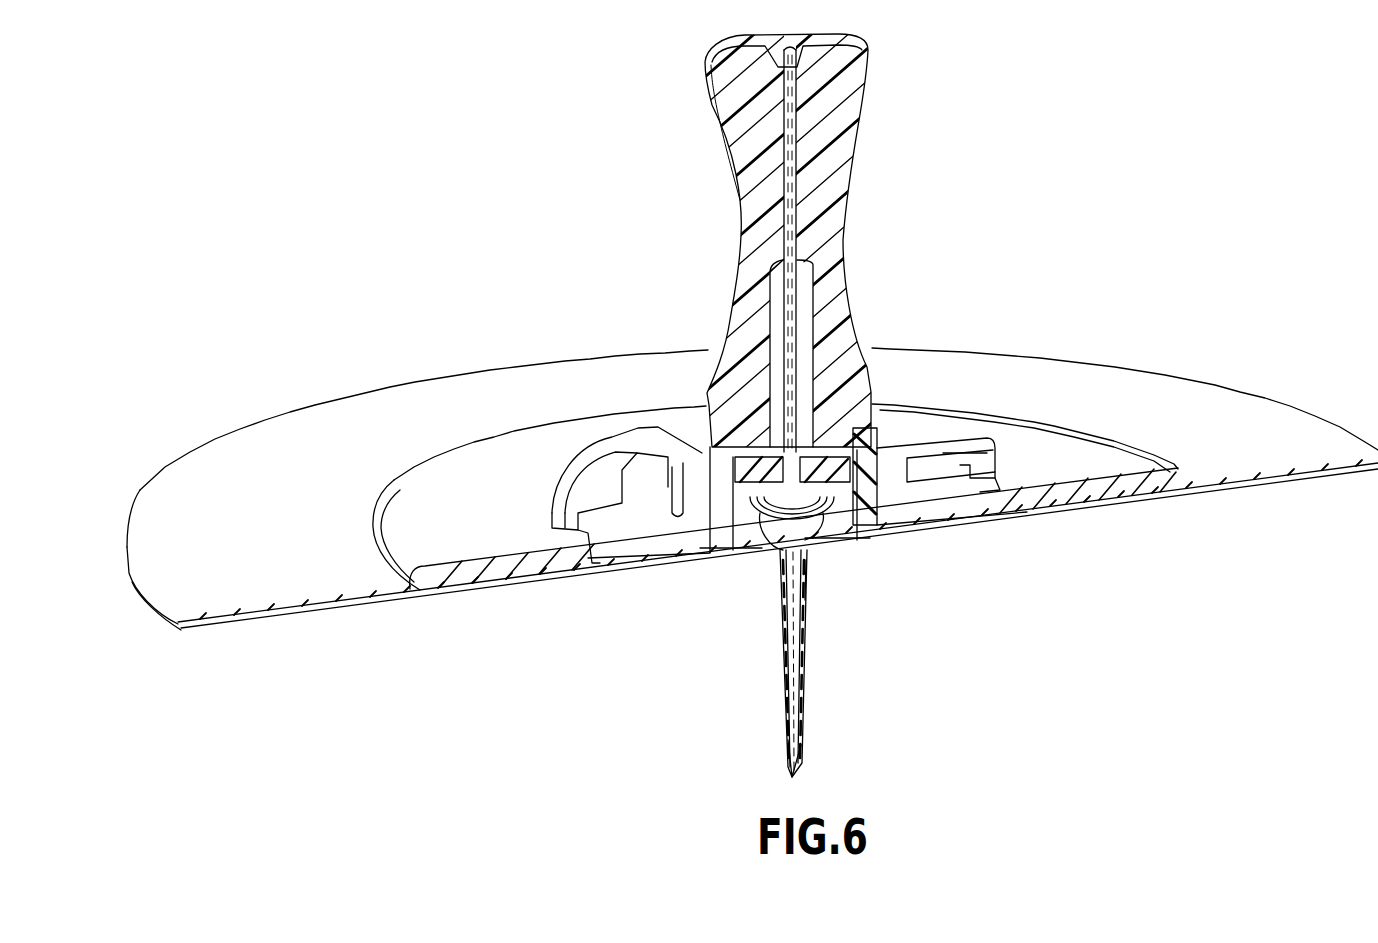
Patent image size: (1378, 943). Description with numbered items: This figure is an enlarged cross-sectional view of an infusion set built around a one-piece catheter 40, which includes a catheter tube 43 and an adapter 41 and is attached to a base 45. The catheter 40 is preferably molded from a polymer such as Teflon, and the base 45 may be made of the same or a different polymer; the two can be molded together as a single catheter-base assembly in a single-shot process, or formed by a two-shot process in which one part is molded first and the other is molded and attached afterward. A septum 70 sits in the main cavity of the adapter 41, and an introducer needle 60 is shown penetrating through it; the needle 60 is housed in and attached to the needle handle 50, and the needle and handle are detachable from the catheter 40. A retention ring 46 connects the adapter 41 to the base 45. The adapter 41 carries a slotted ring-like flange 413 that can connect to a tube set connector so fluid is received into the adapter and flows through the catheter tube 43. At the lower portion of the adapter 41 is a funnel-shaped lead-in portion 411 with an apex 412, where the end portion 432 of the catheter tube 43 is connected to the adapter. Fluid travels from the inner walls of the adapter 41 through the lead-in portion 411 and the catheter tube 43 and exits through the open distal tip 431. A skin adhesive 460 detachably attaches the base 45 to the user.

The catheter 40 is at (885, 428).
The adapter 41 is at (870, 497).
The lead-in portion 411 is at (780, 546).
The apex 412 is at (780, 548).
The flange 413 is at (943, 453).
The catheter tube 43 is at (807, 718).
The open distal tip 431 is at (787, 735).
The end portion 432 is at (810, 593).
The base 45 is at (1080, 493).
The retention ring 46 is at (907, 490).
The skin adhesive 460 is at (312, 573).
The needle handle 50 is at (852, 141).
The introducer needle 60 is at (790, 217).
The septum 70 is at (700, 468).